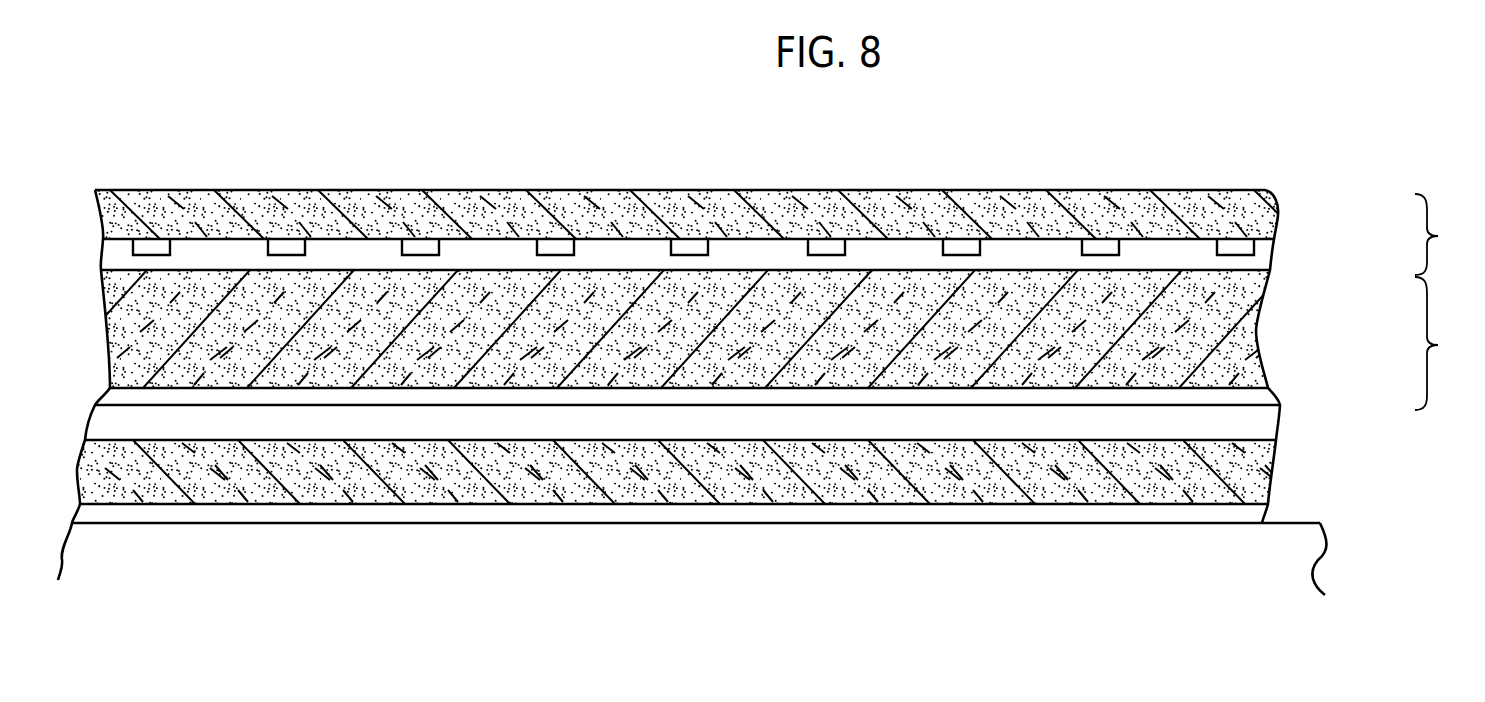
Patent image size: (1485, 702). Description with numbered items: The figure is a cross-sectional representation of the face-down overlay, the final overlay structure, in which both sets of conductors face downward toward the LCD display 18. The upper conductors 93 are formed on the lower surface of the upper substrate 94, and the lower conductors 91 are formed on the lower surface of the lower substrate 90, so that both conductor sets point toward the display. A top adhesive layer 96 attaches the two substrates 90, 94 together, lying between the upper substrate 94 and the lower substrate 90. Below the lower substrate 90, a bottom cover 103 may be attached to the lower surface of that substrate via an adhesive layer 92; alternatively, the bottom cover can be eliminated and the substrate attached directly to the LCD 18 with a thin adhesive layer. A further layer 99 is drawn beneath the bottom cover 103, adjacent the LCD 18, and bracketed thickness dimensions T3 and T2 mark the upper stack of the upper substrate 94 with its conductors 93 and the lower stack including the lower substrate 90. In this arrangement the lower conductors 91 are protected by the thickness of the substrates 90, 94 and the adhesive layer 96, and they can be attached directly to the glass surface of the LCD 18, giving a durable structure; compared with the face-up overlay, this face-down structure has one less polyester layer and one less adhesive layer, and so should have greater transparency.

The upper substrate 94 is at (1258, 230).
The upper conductors 93 is at (1255, 258).
The top adhesive layer 96 is at (1245, 266).
The lower substrate 90 is at (1253, 352).
The lower conductors 91 is at (1253, 400).
The adhesive layer 92 is at (1265, 430).
The bottom cover 103 is at (1265, 470).
The bottom layer 99 is at (1260, 512).
The LCD display 18 is at (1322, 580).
The thickness T3 is at (1444, 234).
The thickness T2 is at (1444, 343).